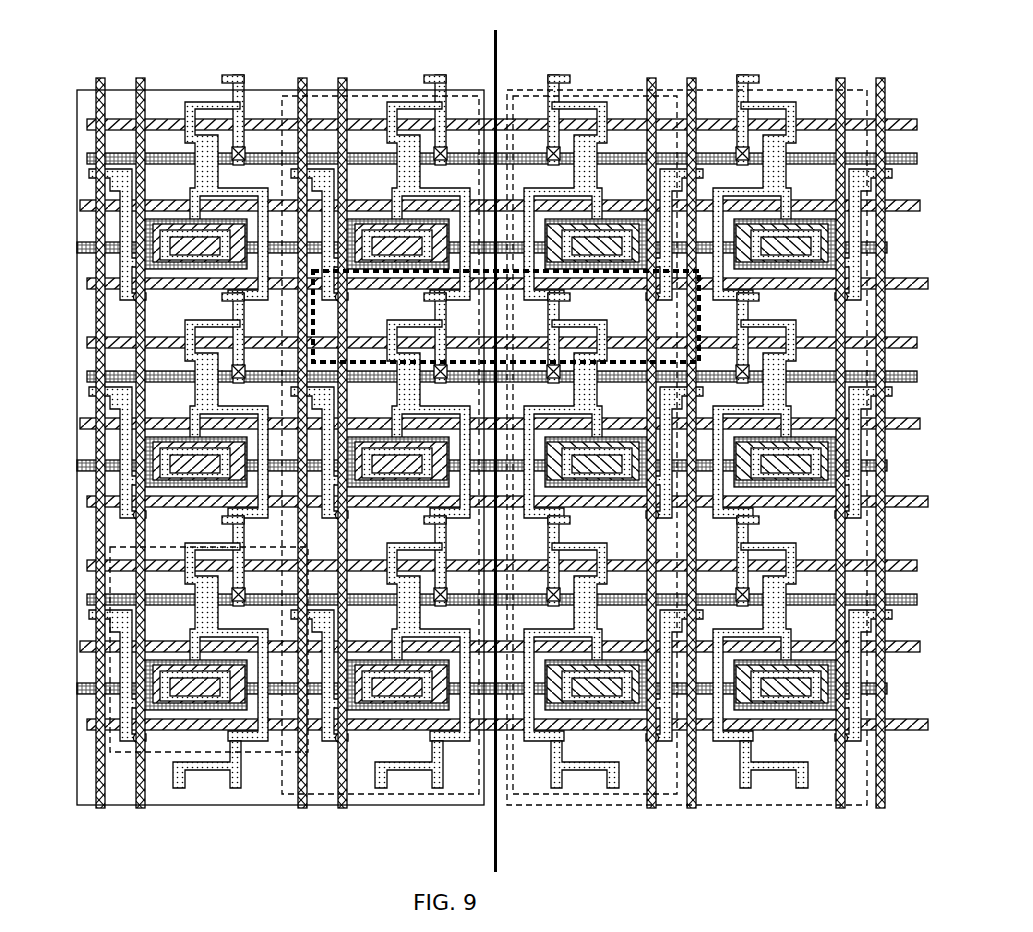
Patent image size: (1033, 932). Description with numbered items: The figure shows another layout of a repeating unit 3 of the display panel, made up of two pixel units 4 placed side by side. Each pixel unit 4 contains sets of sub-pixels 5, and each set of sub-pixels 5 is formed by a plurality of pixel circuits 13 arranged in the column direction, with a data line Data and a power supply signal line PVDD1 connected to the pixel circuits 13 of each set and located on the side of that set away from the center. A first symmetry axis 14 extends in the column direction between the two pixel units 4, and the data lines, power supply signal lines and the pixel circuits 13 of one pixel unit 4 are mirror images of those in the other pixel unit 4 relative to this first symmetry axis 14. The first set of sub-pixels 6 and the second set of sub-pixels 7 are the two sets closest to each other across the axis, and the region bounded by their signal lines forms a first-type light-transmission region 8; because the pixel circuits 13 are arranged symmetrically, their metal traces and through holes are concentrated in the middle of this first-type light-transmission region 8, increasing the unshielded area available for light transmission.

The repeating unit 3 is at (22, 64).
The pixel unit 4 is at (202, 805).
The set of sub-pixels 5 is at (479, 471).
The first set of sub-pixels 6 is at (372, 795).
The second set of sub-pixels 7 is at (573, 795).
The first-type light-transmission region 8 is at (703, 312).
The pixel circuit 13 is at (258, 753).
The first symmetry axis 14 is at (495, 814).